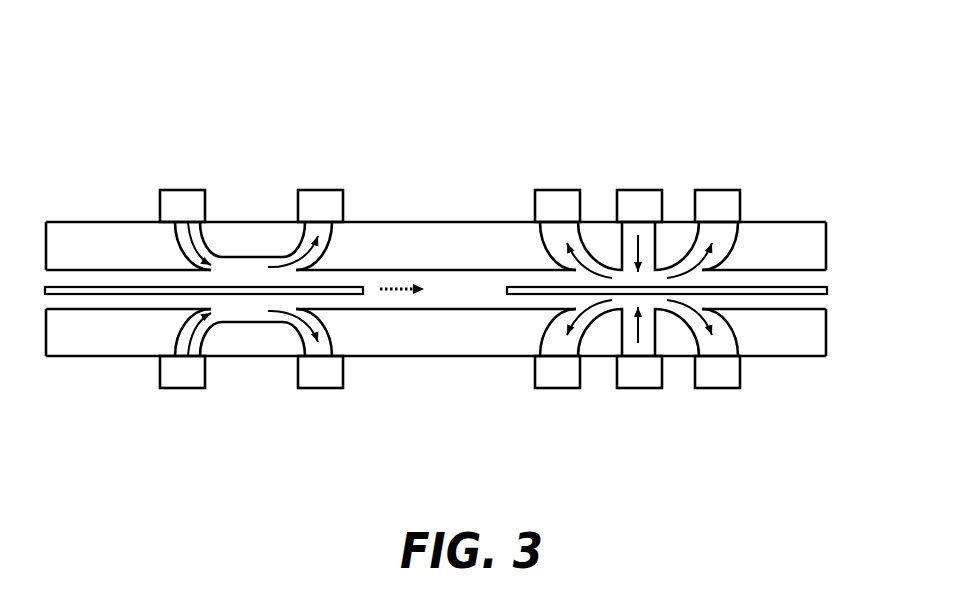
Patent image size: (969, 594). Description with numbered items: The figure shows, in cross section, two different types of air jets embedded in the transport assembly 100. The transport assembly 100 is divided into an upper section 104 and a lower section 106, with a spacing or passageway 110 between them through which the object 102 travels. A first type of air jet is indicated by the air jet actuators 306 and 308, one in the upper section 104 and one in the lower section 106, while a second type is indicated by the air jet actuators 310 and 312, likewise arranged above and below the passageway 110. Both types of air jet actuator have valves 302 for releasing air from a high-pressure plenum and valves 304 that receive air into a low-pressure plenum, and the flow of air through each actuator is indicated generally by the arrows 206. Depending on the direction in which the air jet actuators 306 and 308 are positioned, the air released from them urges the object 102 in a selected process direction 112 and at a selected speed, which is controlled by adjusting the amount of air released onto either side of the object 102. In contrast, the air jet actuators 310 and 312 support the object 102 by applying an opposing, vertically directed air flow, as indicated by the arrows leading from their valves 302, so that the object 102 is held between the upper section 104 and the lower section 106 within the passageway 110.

The transport assembly 100 is at (502, 122).
The object 102 is at (117, 295).
The upper section 104 is at (826, 246).
The lower section 106 is at (824, 344).
The passageway 110 is at (829, 298).
The process direction 112 is at (402, 289).
The arrows 206 is at (330, 252).
The valves 302 is at (180, 202).
The valves 304 is at (327, 205).
The air jet actuator 306 is at (250, 193).
The air jet actuator 308 is at (243, 377).
The air jet actuator 310 is at (670, 160).
The air jet actuator 312 is at (610, 388).